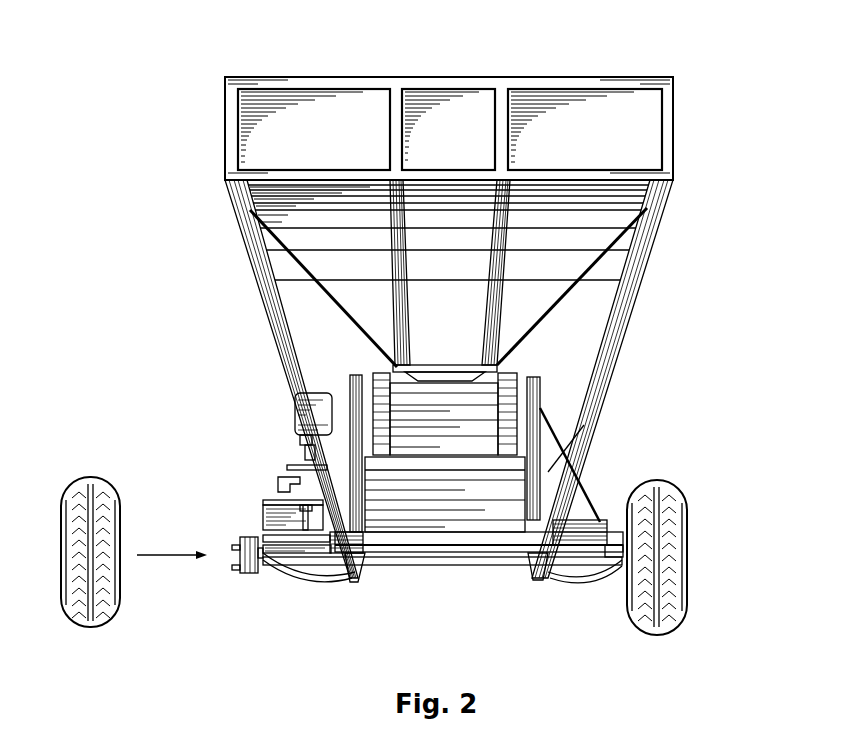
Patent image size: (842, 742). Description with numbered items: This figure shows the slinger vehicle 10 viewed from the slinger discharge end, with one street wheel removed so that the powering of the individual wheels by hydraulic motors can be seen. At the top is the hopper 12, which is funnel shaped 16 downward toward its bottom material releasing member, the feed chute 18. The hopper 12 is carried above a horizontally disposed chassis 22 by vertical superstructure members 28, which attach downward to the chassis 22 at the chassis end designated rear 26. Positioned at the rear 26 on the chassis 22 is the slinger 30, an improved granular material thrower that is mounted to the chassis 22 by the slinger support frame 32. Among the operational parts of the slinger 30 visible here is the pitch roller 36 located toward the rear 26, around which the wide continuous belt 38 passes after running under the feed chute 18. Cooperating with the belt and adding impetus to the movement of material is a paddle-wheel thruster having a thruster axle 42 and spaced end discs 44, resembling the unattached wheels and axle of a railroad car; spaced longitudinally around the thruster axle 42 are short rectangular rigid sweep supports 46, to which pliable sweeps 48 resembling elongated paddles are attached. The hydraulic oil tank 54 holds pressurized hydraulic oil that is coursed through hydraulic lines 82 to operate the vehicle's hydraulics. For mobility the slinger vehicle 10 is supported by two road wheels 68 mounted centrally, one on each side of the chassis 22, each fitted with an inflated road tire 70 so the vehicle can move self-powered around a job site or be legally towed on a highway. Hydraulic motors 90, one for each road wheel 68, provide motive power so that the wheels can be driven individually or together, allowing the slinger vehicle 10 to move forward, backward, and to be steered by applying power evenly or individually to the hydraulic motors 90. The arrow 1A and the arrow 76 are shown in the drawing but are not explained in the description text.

The view direction arrow 1A is at (424, 69).
The slinger vehicle 10 is at (200, 178).
The hopper 12 is at (675, 113).
The funnel shaped portion 16 is at (582, 243).
The feed chute 18 is at (451, 367).
The chassis 22 is at (485, 542).
The rear 26 is at (430, 572).
The vertical superstructure members 28 is at (243, 240).
The slinger 30 is at (360, 342).
The slinger support frame 32 is at (355, 423).
The pitch roller 36 is at (480, 493).
The continuous belt 38 is at (410, 495).
The thruster axle 42 is at (507, 413).
The end discs 44 is at (383, 408).
The rigid sweep supports 46 is at (428, 398).
The pliable sweeps 48 is at (475, 408).
The hydraulic oil tank 54 is at (318, 492).
The road wheels 68 is at (54, 497).
The road tires 70 is at (85, 628).
The direction of travel arrow 76 is at (158, 554).
The hydraulic lines 82 is at (305, 571).
The hydraulic motors 90 is at (238, 571).